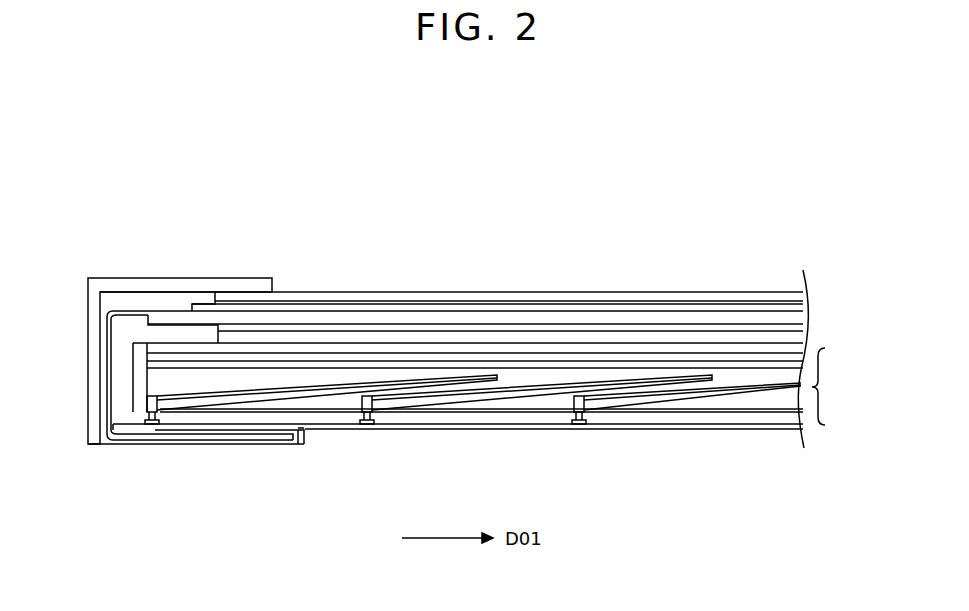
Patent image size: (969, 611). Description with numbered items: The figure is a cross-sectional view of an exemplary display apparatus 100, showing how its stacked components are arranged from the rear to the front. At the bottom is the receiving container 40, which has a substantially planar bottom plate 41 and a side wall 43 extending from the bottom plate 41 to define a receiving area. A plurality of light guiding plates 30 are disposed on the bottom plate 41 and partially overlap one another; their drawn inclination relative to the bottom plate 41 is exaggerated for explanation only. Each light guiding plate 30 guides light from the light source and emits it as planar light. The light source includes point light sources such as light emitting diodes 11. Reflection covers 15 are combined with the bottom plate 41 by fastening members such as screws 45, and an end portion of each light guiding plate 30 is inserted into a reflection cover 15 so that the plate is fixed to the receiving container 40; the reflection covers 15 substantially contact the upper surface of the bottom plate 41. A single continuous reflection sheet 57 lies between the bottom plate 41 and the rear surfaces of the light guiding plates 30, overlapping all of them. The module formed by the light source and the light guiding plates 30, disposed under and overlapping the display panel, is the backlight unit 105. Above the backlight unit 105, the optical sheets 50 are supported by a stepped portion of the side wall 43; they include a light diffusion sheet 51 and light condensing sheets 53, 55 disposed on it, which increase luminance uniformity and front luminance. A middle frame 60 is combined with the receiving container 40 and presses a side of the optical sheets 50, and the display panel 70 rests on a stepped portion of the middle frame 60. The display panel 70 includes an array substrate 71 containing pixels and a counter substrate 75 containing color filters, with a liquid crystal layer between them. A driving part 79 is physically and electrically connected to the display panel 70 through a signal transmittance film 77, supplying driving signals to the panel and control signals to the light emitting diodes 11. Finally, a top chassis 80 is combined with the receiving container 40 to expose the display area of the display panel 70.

The display apparatus 100 is at (470, 139).
The top chassis 80 is at (135, 286).
The middle frame 60 is at (177, 330).
The display panel 70 is at (475, 259).
The array substrate 71 is at (445, 220).
The counter substrate 75 is at (438, 306).
The optical sheets 50 is at (468, 278).
The light diffusion sheet 51 is at (566, 365).
The light condensing sheet 53 is at (613, 356).
The light condensing sheet 55 is at (664, 347).
The side wall 43 is at (124, 394).
The light guiding plate 30 is at (334, 396).
The screw 45 is at (367, 425).
The light emitting diode 11 is at (574, 404).
The reflection cover 15 is at (627, 410).
The reflection sheet 57 is at (772, 410).
The bottom plate 41 is at (484, 419).
The receiving container 40 is at (731, 441).
The driving part 79 is at (221, 435).
The signal transmittance film 77 is at (118, 443).
The backlight unit 105 is at (838, 386).